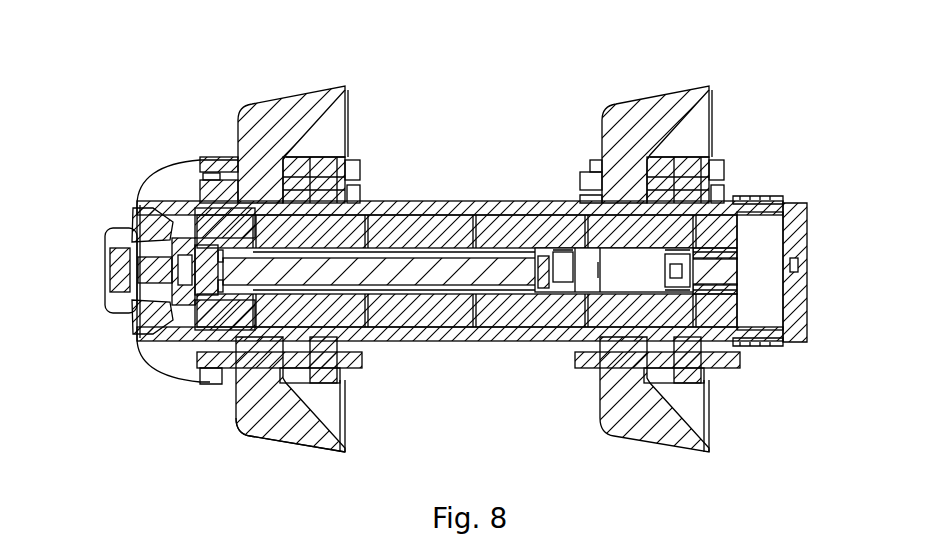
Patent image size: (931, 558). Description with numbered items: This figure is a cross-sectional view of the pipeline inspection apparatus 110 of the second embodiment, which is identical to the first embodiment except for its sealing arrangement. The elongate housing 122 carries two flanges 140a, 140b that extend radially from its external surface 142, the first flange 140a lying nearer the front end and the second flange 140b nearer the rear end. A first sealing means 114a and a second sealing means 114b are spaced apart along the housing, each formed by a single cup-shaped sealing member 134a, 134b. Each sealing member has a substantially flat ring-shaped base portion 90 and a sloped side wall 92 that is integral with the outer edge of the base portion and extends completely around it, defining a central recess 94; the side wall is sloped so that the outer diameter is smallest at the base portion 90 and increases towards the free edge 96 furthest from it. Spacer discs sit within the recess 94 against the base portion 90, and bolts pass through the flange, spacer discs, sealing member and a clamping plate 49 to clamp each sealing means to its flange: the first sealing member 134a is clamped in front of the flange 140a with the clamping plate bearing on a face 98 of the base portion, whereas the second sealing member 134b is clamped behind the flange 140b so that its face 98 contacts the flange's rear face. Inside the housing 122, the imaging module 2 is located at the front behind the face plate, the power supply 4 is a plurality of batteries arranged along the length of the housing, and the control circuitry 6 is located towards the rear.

The imaging module 2 is at (160, 351).
The power supply 4 is at (413, 311).
The control circuitry 6 is at (630, 265).
The washer 49 is at (233, 155).
The base portion 90 is at (258, 390).
The side wall 92 is at (293, 436).
The central recess 94 is at (328, 140).
The free edge 96 is at (346, 447).
The face of the base portion 98 is at (238, 398).
The pipeline inspection apparatus 110 is at (510, 78).
The first sealing means 114a is at (297, 87).
The second sealing means 114b is at (657, 87).
The housing 122 is at (490, 342).
The first sealing member 134a is at (274, 110).
The second sealing member 134b is at (646, 110).
The first flange 140a is at (345, 166).
The second flange 140b is at (597, 164).
The external surface 142 is at (464, 204).